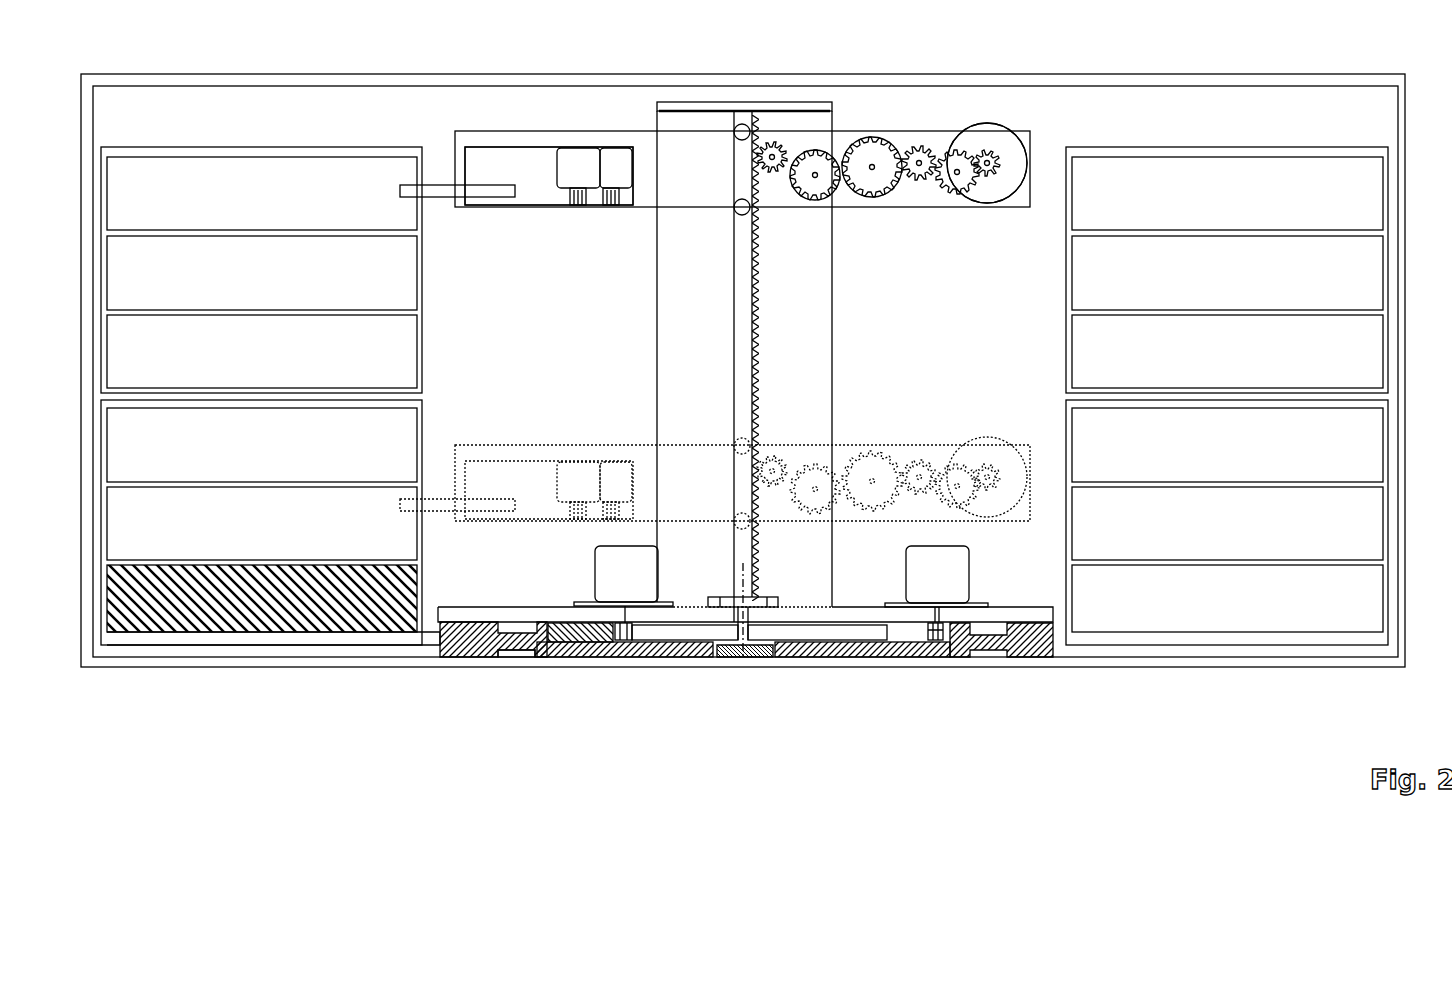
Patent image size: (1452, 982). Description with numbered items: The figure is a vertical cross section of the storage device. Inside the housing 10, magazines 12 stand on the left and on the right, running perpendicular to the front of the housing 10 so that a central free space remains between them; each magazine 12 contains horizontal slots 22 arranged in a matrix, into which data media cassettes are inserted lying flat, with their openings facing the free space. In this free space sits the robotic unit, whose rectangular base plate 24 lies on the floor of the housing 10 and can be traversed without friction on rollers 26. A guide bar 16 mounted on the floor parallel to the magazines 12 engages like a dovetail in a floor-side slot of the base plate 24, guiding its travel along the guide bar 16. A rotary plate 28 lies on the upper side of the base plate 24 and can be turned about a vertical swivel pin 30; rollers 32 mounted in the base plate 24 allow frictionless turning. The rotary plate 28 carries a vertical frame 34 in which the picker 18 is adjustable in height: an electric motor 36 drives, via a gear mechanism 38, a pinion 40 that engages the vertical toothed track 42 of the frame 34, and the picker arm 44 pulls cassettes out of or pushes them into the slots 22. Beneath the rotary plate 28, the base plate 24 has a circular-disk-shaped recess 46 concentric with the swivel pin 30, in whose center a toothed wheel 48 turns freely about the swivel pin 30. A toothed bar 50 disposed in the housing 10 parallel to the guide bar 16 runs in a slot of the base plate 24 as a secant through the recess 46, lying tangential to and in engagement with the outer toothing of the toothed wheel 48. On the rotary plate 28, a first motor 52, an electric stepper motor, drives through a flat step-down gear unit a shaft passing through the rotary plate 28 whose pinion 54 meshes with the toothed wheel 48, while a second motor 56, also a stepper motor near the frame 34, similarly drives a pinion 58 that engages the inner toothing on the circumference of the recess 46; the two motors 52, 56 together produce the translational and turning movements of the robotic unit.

The housing 10 is at (288, 663).
The magazines 12 is at (117, 147).
The guide bar 16 is at (767, 657).
The picker 18 is at (605, 137).
The slots 22 is at (233, 177).
The base plate 24 is at (1043, 637).
The rollers 26 is at (517, 653).
The rotary plate 28 is at (462, 616).
The swivel pin 30 is at (743, 595).
The rollers 32 is at (522, 627).
The frame 34 is at (813, 391).
The motor 36 is at (1014, 146).
The gear mechanism 38 is at (888, 140).
The pinion 40 is at (773, 149).
The toothed track 42 is at (757, 247).
The picker arm 44 is at (472, 157).
The recess 46 is at (903, 632).
The toothed wheel 48 is at (810, 632).
The toothed bar 50 is at (573, 632).
The first motor 52 is at (623, 590).
The pinion 54 is at (623, 632).
The second motor 56 is at (933, 573).
The pinion 58 is at (935, 633).